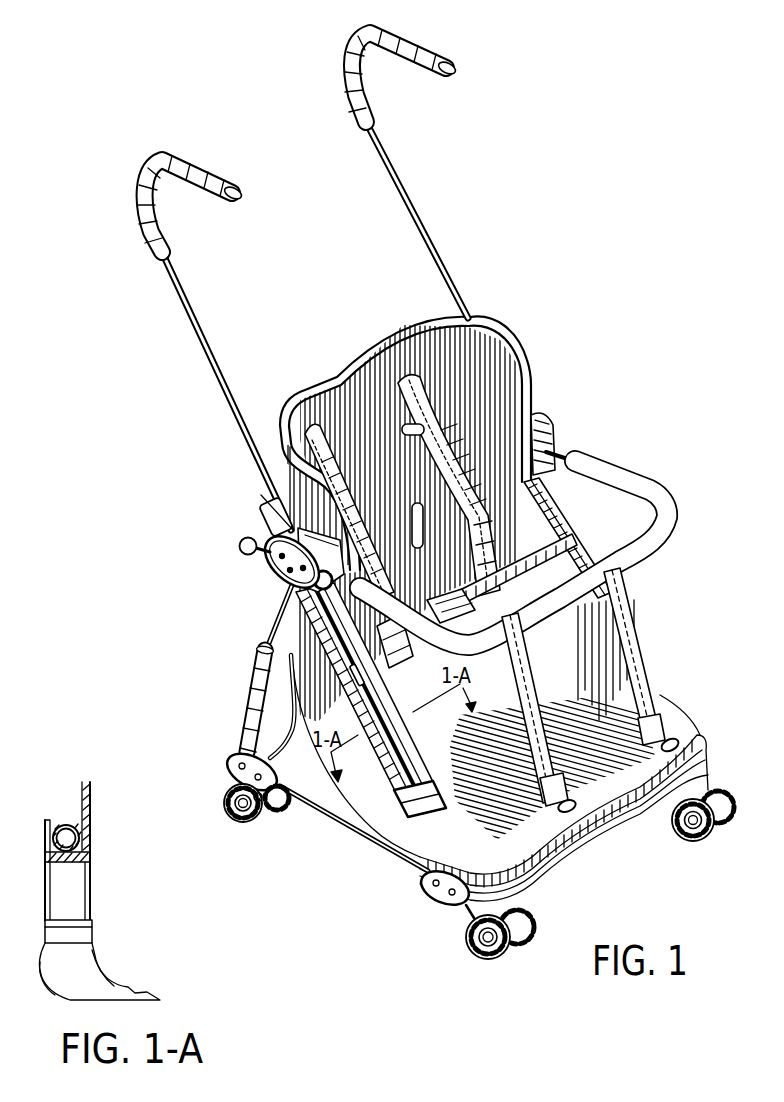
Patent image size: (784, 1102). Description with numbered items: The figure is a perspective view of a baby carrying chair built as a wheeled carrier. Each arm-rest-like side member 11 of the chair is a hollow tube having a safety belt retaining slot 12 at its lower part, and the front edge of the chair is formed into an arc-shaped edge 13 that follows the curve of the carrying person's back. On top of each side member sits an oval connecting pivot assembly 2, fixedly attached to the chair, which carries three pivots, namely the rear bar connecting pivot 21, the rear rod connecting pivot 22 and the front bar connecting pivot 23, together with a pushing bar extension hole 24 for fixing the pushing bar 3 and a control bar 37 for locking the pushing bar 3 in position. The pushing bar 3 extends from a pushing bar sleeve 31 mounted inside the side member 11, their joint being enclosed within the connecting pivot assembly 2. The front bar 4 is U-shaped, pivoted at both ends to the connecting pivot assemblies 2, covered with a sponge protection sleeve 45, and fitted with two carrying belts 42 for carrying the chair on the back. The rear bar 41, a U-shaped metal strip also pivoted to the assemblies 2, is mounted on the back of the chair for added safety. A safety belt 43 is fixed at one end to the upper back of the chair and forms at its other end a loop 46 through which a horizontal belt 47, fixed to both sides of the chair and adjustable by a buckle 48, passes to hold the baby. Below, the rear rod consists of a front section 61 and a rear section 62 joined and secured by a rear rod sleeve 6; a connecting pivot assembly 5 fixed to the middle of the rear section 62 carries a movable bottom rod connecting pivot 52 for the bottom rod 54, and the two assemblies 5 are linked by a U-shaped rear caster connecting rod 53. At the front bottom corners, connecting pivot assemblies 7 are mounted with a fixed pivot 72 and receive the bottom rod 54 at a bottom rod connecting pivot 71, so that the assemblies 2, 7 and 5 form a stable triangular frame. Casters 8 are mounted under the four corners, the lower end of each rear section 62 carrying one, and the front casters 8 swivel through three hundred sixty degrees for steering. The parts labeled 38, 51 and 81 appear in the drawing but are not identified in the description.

In FIG. 1, the connecting pivot assembly 2 is at (552, 432).
In FIG. 1, the pushing bar 3 is at (393, 160).
In FIG. 1, the front bar 4 is at (562, 450).
In FIG. 1, the connecting pivot assembly 5 is at (232, 763).
In FIG. 1, the rear rod sleeve 6 is at (256, 683).
In FIG. 1, the connecting pivot assembly 7 is at (421, 880).
In FIG. 1, the caster 8 is at (236, 816).
In FIG. 1, the side member of the carrying chair 11 is at (408, 746).
In FIG. 1-A, the side member of the carrying chair 11 is at (75, 887).
In FIG. 1, the safety belt retaining slot 12 is at (410, 806).
In FIG. 1, the arc-shaped edge 13 is at (609, 820).
In FIG. 1, the rear bar connecting pivot 21 is at (274, 575).
In FIG. 1, the rear rod connecting pivot 22 is at (300, 586).
In FIG. 1, the front bar connecting pivot 23 is at (312, 596).
In FIG. 1, the pushing bar extension hole 24 is at (266, 522).
In FIG. 1-A, the pushing bar sleeve 31 is at (60, 829).
In FIG. 1, the control bar 37 is at (238, 546).
In FIG. 1, the handle grip 38 is at (230, 206).
In FIG. 1, the rear bar 41 is at (267, 499).
In FIG. 1, the carrying belts 42 is at (628, 626).
In FIG. 1, the safety belt 43 is at (442, 420).
In FIG. 1, the sponge protection sleeve 45 is at (643, 500).
In FIG. 1, the loop 46 is at (399, 663).
In FIG. 1, the horizontal belt 47 is at (508, 582).
In FIG. 1, the buckle 48 is at (443, 603).
In FIG. 1, the pivot hole 51 is at (238, 780).
In FIG. 1, the movable bottom rod connecting pivot 52 is at (262, 801).
In FIG. 1, the rear caster connecting rod 53 is at (280, 752).
In FIG. 1, the bottom rod 54 is at (350, 840).
In FIG. 1, the front section of the rear rod 61 is at (278, 627).
In FIG. 1, the rear section of the rear rod 62 is at (248, 750).
In FIG. 1, the bottom rod connecting pivot 71 is at (428, 890).
In FIG. 1, the fixed pivot 72 is at (449, 898).
In FIG. 1, the axle 81 is at (470, 922).